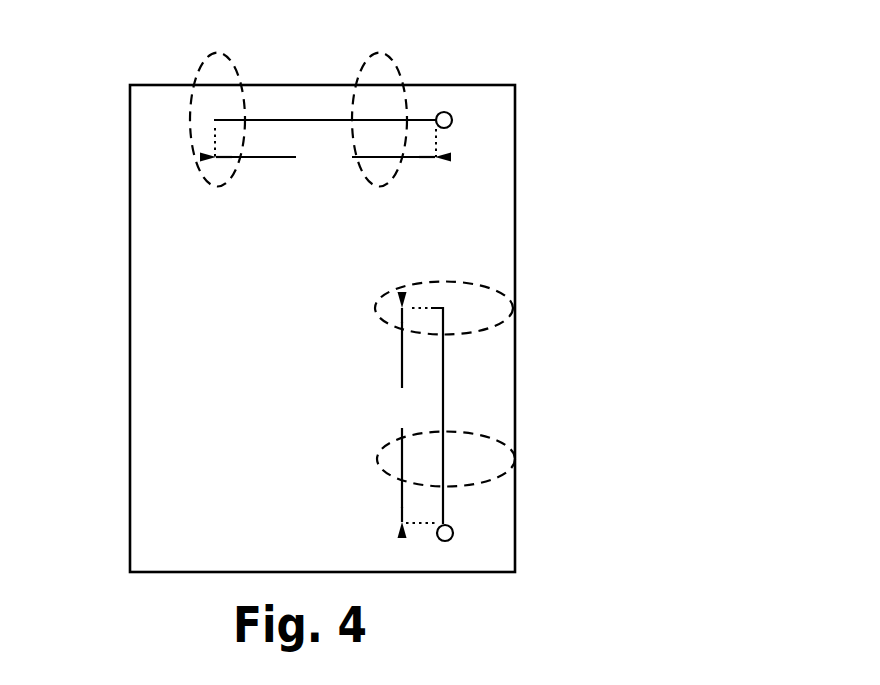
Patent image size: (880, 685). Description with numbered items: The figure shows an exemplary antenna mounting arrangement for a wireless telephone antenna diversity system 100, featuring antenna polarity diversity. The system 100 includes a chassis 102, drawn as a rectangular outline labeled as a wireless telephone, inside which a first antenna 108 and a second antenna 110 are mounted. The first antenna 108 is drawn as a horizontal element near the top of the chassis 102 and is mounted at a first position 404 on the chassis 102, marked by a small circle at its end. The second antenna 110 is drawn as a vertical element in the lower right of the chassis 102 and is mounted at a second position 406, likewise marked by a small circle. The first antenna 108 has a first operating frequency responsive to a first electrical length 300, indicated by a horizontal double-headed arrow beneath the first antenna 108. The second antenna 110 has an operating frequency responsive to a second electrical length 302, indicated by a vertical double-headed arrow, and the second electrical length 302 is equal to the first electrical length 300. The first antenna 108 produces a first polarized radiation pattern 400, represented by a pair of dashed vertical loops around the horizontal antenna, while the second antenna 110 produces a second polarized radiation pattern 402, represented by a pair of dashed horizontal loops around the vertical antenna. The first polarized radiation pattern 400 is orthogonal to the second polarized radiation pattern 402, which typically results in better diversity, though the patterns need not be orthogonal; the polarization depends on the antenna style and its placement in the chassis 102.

The wireless telephone antenna diversity system 100 is at (722, 165).
The chassis 102 is at (130, 235).
The first antenna 108 is at (289, 120).
The second antenna 110 is at (443, 396).
The first electrical length 300 is at (325, 147).
The second electrical length 302 is at (411, 415).
The first polarized radiation pattern 400 is at (217, 187).
The second polarized radiation pattern 402 is at (377, 303).
The first position 404 is at (503, 120).
The second position 406 is at (494, 533).